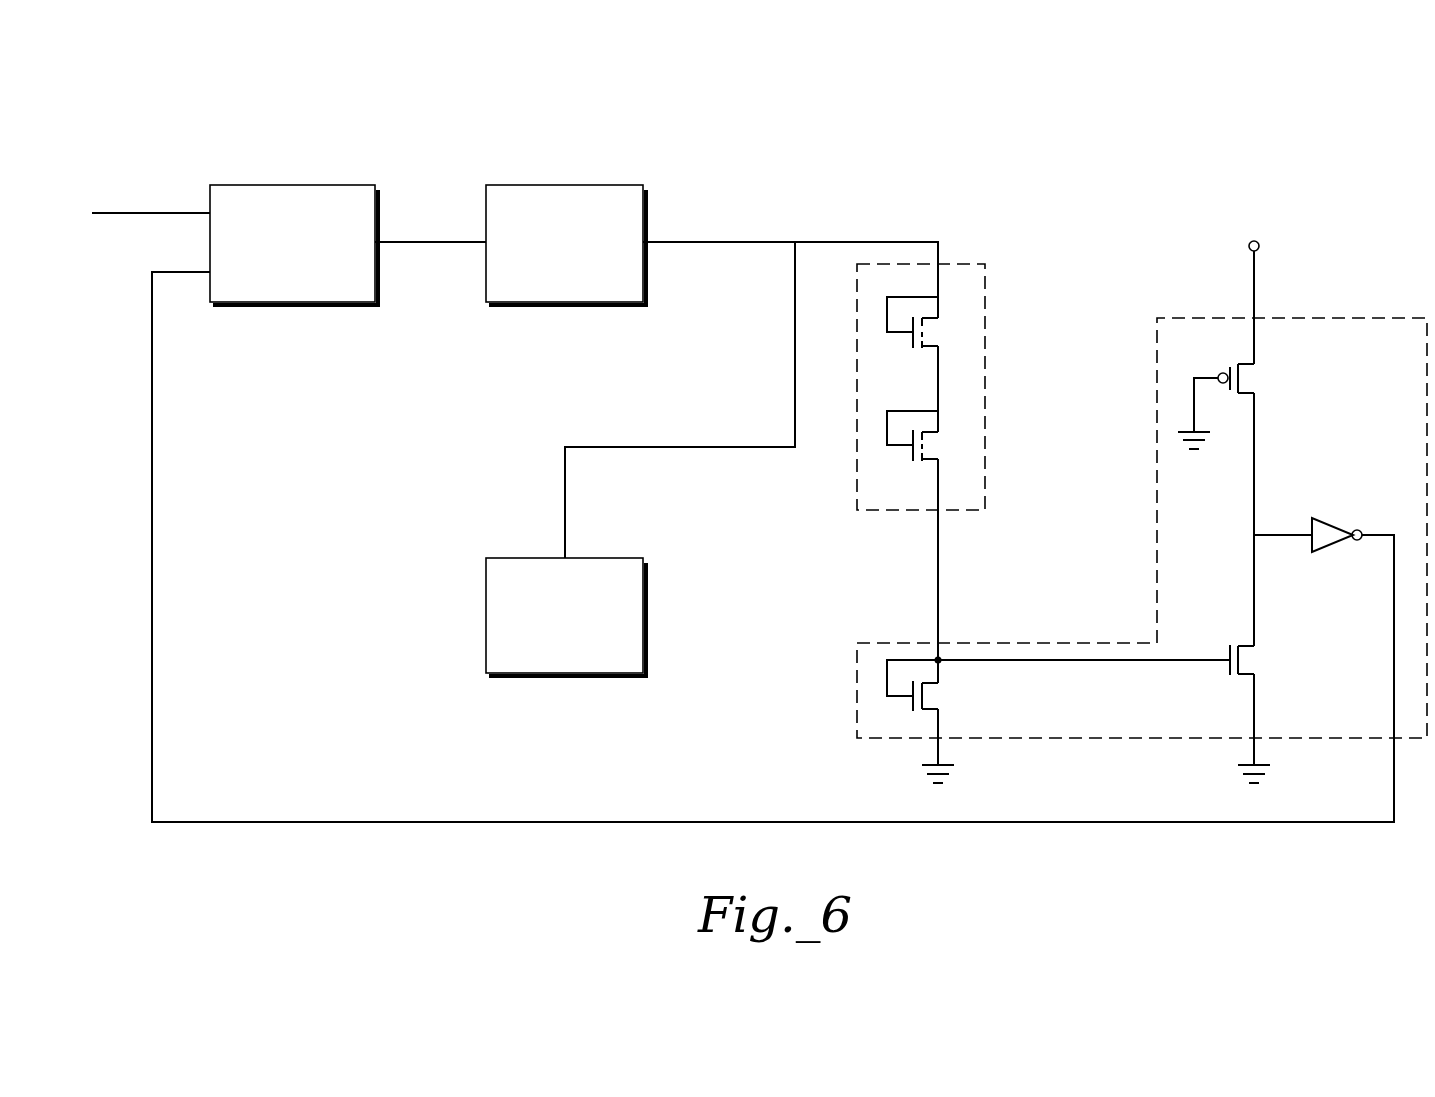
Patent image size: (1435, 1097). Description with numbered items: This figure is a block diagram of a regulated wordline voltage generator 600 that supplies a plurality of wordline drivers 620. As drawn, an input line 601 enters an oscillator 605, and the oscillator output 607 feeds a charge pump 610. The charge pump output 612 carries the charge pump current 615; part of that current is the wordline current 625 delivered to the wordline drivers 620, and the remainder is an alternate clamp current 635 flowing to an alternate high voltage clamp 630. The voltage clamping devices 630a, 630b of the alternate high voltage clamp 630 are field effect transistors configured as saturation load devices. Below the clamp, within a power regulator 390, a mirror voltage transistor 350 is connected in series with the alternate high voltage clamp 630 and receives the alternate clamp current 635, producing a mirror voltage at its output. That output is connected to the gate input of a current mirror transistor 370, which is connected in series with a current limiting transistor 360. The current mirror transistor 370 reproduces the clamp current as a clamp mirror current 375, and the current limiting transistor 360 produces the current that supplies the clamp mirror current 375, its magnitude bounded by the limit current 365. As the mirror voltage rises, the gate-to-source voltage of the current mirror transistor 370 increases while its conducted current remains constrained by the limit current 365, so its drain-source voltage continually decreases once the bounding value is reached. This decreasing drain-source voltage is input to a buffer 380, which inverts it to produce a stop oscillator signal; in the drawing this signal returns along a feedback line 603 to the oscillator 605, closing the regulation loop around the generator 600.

The regulated wordline voltage generator 600 is at (962, 132).
The enable input line 601 is at (142, 212).
The feedback control line 603 is at (176, 271).
The oscillator 605 is at (298, 184).
The oscillator output line 607 is at (418, 241).
The charge pump 610 is at (565, 184).
The charge pump output 612 is at (706, 241).
The charge pump current 615 is at (724, 254).
The wordline drivers 620 is at (646, 578).
The wordline current 625 is at (778, 400).
The alternate high voltage clamp 630 is at (956, 462).
The voltage clamping device 630a is at (900, 350).
The voltage clamping device 630b is at (900, 460).
The alternate clamp current 635 is at (952, 548).
The mirror voltage transistor 350 is at (937, 697).
The current limiting transistor 360 is at (1254, 380).
The limit current 365 is at (1269, 427).
The current mirror transistor 370 is at (1254, 662).
The clamp mirror current 375 is at (1269, 565).
The buffer 380 is at (1336, 528).
The power regulator 390 is at (1342, 318).